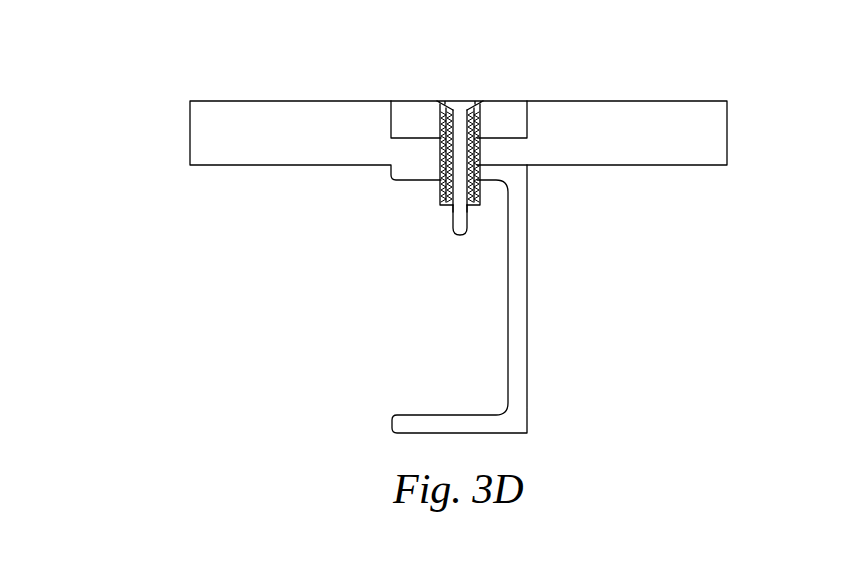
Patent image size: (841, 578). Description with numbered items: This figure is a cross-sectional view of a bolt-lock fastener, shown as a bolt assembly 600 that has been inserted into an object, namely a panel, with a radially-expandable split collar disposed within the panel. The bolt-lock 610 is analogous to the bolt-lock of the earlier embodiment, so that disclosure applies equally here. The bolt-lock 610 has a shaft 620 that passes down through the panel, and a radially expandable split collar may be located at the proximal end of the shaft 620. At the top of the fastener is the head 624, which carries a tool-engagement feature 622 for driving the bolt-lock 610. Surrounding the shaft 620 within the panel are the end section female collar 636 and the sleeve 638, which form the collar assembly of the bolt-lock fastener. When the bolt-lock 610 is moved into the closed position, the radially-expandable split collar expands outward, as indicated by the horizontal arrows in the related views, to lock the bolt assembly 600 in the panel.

The bolt assembly 600 is at (173, 22).
The bolt-lock 610 is at (518, 123).
The shaft 620 is at (445, 222).
The tool-engagement feature 622 is at (457, 85).
The head 624 is at (481, 109).
The end section female collar 636 is at (442, 190).
The sleeve 638 is at (470, 207).